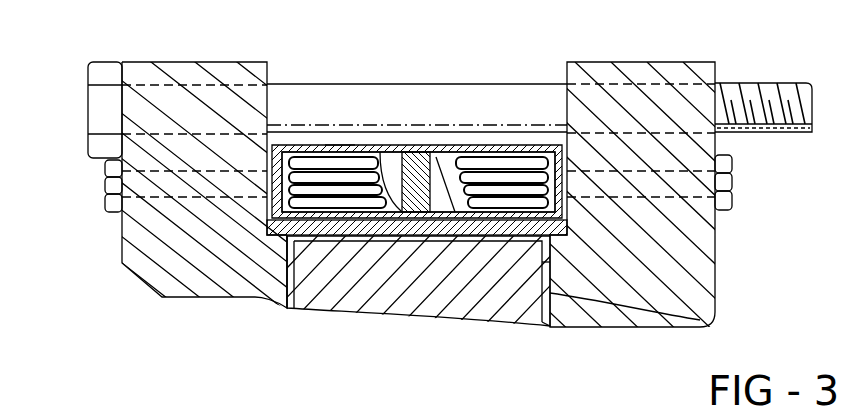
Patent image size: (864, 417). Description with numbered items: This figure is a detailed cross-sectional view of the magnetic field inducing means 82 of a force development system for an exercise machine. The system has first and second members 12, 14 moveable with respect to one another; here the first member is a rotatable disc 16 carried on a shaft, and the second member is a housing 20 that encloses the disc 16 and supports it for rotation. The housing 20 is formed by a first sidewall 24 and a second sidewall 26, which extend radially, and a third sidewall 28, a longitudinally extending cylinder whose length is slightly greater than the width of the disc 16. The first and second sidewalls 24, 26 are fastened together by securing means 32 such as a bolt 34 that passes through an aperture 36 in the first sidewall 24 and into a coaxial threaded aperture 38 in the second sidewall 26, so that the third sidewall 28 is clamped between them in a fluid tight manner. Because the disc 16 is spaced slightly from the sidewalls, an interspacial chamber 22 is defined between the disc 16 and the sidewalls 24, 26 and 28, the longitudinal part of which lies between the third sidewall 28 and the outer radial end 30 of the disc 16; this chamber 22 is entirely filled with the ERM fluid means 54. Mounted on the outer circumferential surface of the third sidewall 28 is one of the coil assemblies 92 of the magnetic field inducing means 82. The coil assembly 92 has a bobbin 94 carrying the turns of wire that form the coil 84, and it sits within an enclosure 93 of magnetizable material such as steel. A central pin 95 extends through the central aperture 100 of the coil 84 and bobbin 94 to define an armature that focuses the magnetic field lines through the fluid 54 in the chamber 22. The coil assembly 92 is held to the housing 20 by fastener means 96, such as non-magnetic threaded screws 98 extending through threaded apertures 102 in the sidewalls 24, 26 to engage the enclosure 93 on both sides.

The first member 12 is at (477, 303).
The second member 14 is at (160, 282).
The rotatable disc 16 is at (407, 303).
The housing 20 is at (213, 145).
The interspacial chamber 22 is at (289, 300).
The first sidewall 24 is at (300, 278).
The second sidewall 26 is at (716, 310).
The third sidewall 28 is at (357, 230).
The outer radial end 30 is at (508, 243).
The securing means 32 is at (88, 70).
The bolt 34 is at (450, 84).
The aperture 36 is at (156, 86).
The threaded aperture 38 is at (596, 84).
The ERM fluid means 54 is at (546, 327).
The magnetic field inducing means 82 is at (340, 140).
The coil 84 is at (488, 172).
The coil assembly 92 is at (292, 140).
The enclosure 93 is at (313, 140).
The bobbin 94 is at (462, 170).
The central pin 95 is at (412, 160).
The fastener means 96 is at (100, 175).
The non-magnetic threaded screws 98 is at (203, 170).
The central aperture 100 is at (392, 185).
The threaded apertures 102 is at (136, 171).